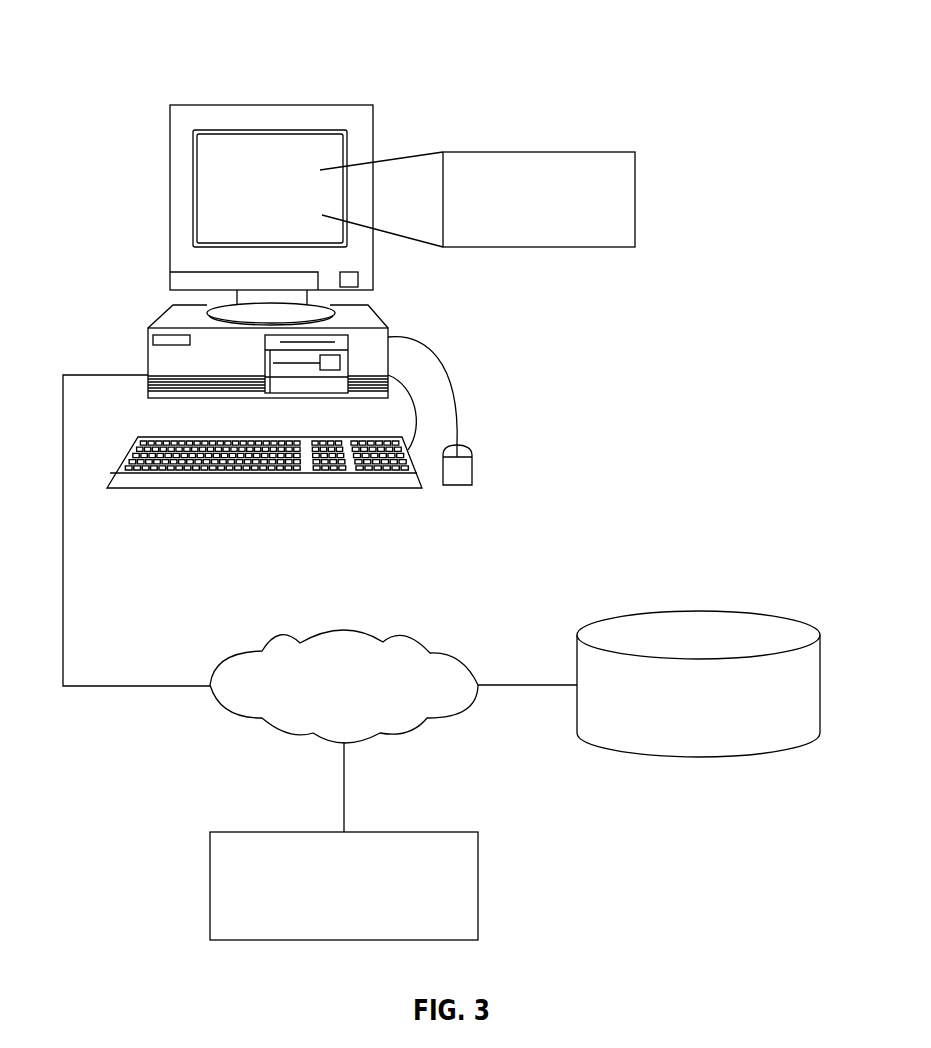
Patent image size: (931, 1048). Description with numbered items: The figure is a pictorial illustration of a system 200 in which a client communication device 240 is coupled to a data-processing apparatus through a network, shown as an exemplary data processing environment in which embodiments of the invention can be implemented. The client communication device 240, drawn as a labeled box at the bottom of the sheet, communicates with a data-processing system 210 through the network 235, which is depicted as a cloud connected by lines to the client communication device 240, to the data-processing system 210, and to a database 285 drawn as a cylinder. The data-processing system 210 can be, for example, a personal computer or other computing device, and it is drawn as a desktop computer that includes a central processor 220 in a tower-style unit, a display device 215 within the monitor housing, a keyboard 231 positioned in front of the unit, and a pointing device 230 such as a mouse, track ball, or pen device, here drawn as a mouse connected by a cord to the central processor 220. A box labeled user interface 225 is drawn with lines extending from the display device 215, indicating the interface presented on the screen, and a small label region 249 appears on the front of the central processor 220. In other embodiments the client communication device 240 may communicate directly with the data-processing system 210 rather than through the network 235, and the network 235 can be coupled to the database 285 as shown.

The system 200 is at (150, 36).
The data-processing system 210 is at (345, 103).
The display device 215 is at (292, 130).
The central processor 220 is at (158, 398).
The user interface 225 is at (600, 152).
The pointing device 230 is at (490, 463).
The keyboard 231 is at (273, 488).
The network 235 is at (400, 637).
The client communication device 240 is at (448, 832).
The computer label 249 is at (148, 340).
The database 285 is at (700, 611).